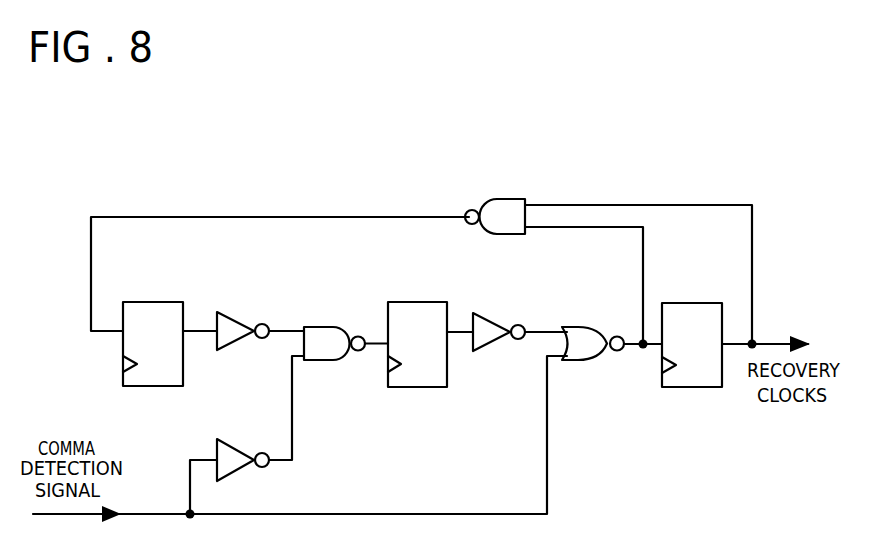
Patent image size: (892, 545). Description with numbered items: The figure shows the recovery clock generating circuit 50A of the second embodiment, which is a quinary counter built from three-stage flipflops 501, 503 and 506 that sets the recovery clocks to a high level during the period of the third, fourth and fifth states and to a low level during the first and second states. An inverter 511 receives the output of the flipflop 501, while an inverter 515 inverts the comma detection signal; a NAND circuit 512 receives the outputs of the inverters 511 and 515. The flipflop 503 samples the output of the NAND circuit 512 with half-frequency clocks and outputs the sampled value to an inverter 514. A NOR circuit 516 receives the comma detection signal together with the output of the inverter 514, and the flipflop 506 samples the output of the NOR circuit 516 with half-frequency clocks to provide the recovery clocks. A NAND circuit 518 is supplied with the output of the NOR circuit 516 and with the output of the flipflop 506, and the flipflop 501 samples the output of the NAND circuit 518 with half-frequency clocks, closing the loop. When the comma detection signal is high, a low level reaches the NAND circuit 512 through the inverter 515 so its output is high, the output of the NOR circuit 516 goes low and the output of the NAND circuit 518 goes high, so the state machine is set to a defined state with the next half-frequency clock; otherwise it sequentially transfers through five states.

The recovery clock generating circuit 50A is at (263, 206).
The flipflop 501 is at (134, 301).
The flipflop 503 is at (396, 302).
The flipflop 506 is at (672, 303).
The inverter 511 is at (222, 312).
The NAND circuit 512 is at (316, 327).
The inverter 514 is at (478, 314).
The inverter 515 is at (218, 443).
The NOR circuit 516 is at (577, 326).
The NAND circuit 518 is at (505, 198).